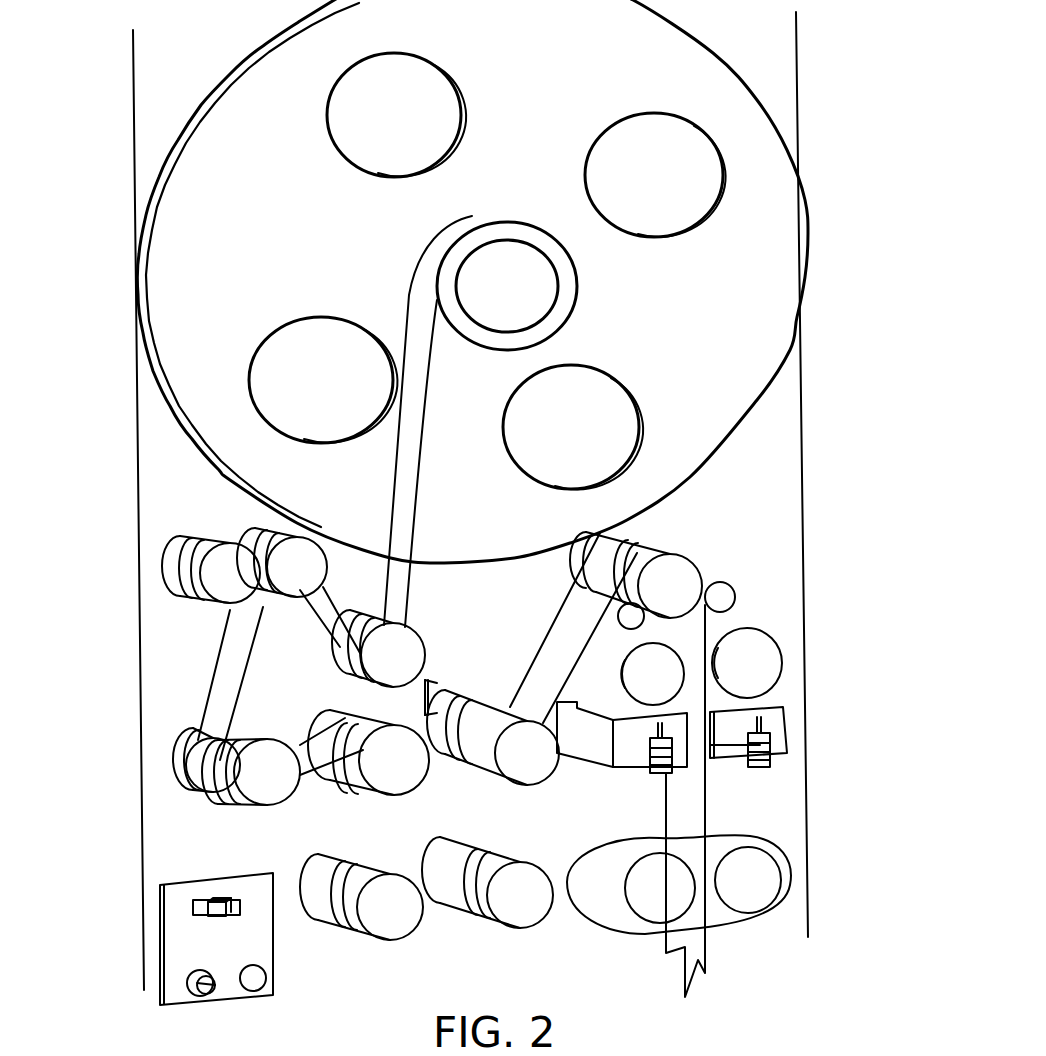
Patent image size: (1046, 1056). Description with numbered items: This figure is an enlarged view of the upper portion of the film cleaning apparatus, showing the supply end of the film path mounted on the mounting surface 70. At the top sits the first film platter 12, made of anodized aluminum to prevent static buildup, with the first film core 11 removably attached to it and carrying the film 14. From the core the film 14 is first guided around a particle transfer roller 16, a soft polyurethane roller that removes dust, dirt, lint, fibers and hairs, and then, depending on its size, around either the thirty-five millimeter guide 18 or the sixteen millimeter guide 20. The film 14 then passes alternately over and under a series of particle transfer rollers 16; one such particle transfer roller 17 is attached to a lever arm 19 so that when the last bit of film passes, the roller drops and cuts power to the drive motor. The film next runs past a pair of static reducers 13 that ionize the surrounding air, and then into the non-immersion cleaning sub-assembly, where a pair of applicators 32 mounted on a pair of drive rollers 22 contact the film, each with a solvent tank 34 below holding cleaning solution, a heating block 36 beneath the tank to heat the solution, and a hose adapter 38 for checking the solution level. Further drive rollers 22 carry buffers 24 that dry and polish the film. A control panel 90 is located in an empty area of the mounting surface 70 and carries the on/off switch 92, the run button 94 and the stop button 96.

The first film core 11 is at (644, 292).
The first film platter 12 is at (506, 281).
The static reducer 13 is at (689, 625).
The film 14 is at (462, 491).
The particle transfer roller 16 is at (455, 719).
The particle transfer roller 17 is at (301, 822).
The 35 mm guide 18 is at (204, 492).
The lever arm 19 is at (250, 728).
The 16 mm guide 20 is at (165, 556).
The drive roller 22 is at (727, 795).
The buffer 24 is at (759, 809).
The applicator 32 is at (760, 625).
The solvent tank 34 is at (770, 762).
The heating block 36 is at (773, 760).
The hose adapter 38 is at (727, 727).
The mounting surface 70 is at (272, 681).
The control panel 90 is at (176, 939).
The on/off switch 92 is at (155, 894).
The run button 94 is at (147, 1004).
The stop button 96 is at (186, 957).